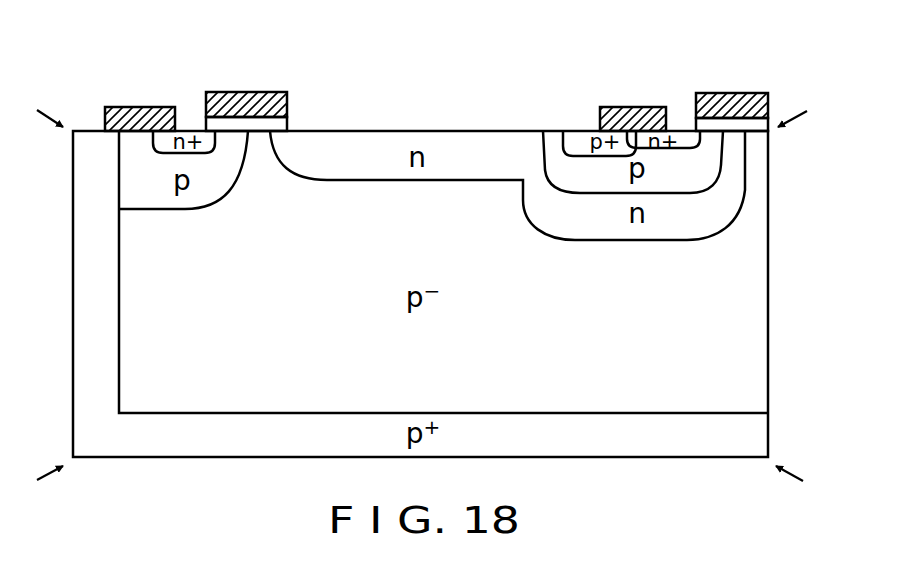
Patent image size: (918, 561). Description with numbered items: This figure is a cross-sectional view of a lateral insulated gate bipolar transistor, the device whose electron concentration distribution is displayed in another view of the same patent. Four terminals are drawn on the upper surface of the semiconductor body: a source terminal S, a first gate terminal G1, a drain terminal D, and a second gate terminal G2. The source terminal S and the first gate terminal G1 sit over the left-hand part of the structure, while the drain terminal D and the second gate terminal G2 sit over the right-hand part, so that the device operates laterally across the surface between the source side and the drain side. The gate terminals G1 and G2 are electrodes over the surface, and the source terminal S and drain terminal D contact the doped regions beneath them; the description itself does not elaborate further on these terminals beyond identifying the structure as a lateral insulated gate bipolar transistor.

The source electrode S is at (138, 107).
The first gate electrode G1 is at (241, 92).
The drain electrode D is at (630, 107).
The second gate electrode G2 is at (734, 93).